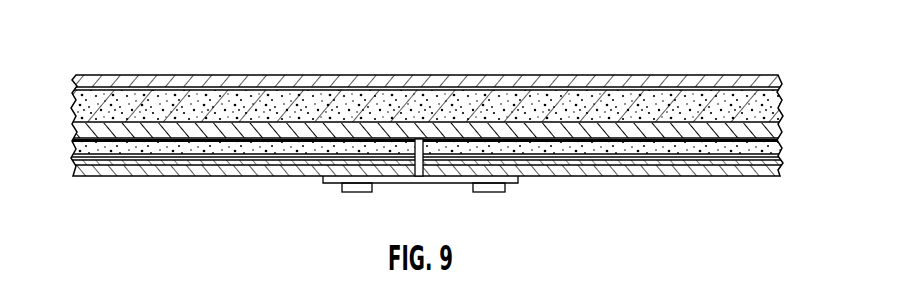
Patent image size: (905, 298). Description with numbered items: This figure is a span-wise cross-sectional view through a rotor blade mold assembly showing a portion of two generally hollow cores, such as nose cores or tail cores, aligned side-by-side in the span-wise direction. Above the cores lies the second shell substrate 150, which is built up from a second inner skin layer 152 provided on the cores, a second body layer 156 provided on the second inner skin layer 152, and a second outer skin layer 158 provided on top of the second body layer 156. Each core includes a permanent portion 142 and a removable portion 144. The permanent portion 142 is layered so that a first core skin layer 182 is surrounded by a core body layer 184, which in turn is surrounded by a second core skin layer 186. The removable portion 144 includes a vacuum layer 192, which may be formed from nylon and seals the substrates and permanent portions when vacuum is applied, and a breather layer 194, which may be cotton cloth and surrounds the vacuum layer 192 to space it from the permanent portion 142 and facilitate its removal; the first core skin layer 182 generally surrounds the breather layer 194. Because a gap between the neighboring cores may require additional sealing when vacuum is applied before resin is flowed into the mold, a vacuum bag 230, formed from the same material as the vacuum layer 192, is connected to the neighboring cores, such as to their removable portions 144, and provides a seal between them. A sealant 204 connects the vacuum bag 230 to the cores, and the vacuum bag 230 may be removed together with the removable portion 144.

The second shell substrate 150 is at (450, 78).
The second outer skin layer 158 is at (286, 80).
The second body layer 156 is at (184, 89).
The second inner skin layer 152 is at (327, 130).
The permanent portion 142 is at (438, 168).
The second core skin layer 186 is at (125, 141).
The core body layer 184 is at (155, 148).
The first core skin layer 182 is at (203, 157).
The breather layer 194 is at (92, 163).
The removable portion 144 is at (785, 168).
The vacuum layer 192 is at (78, 182).
The vacuum bag 230 is at (422, 184).
The sealant 204 is at (352, 185).